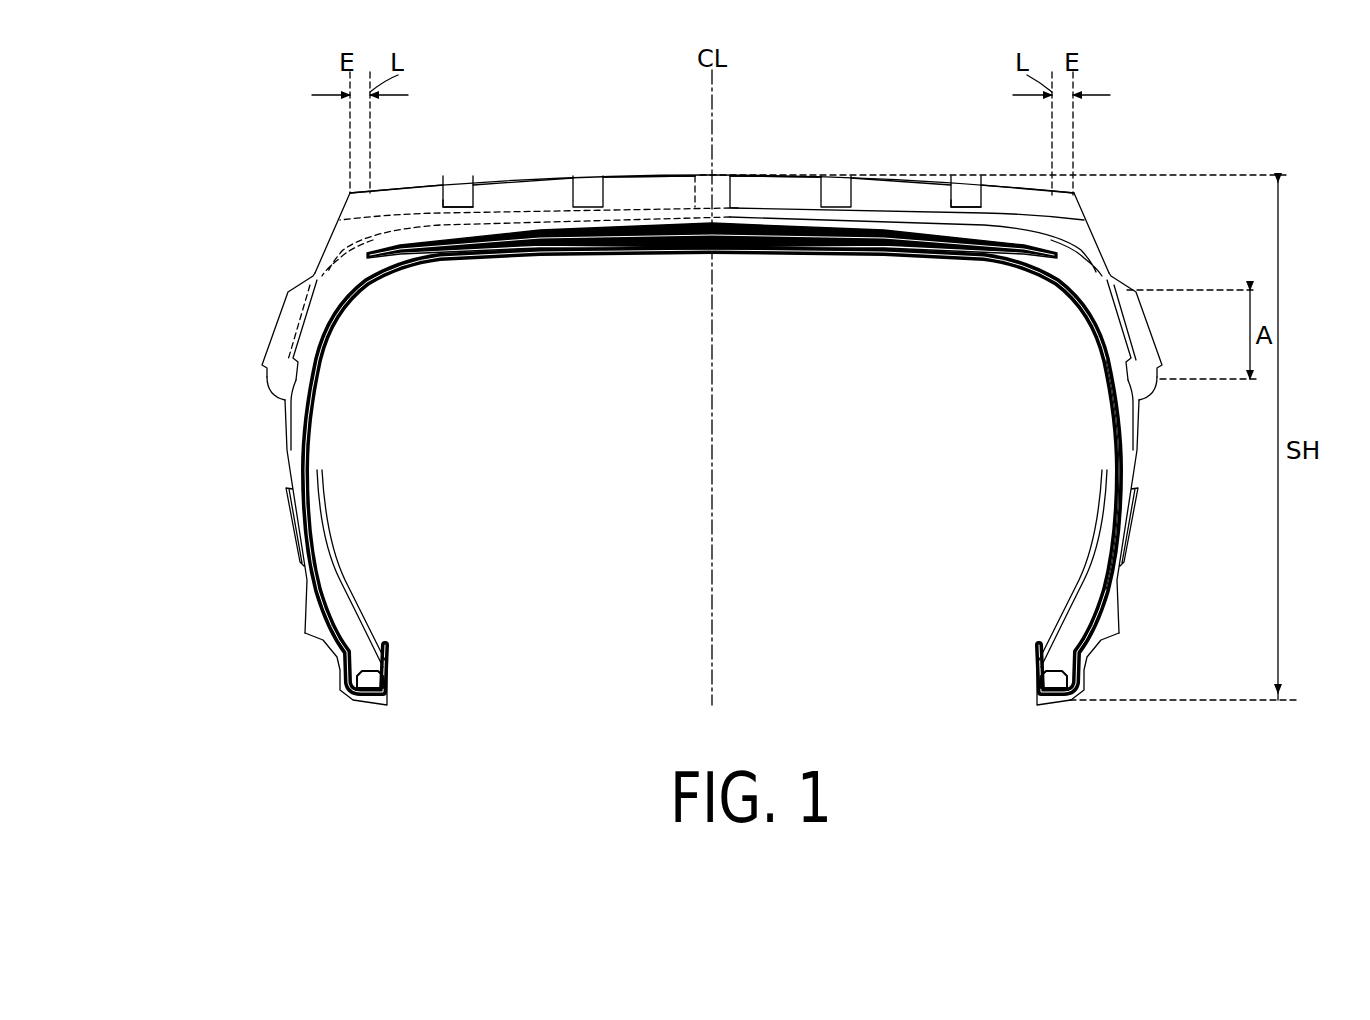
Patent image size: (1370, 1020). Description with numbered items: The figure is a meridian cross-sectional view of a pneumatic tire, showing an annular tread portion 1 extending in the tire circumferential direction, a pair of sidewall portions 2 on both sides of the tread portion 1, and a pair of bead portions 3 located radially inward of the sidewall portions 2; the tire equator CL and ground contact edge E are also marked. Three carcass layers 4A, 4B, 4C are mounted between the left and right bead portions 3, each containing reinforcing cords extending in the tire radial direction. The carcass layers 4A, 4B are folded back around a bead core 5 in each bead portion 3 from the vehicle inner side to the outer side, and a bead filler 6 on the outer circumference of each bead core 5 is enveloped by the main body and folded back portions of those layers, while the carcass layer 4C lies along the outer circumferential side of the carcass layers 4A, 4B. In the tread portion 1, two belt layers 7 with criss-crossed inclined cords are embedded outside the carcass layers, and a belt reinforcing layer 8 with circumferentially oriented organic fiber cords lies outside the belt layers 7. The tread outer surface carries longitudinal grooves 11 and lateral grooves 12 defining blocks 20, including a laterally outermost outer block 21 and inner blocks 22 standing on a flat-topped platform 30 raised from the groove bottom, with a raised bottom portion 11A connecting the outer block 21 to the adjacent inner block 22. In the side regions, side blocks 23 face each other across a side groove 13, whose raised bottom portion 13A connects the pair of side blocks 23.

The tread portion 1 is at (725, 140).
The sidewall portion 2 is at (270, 433).
The bead portion 3 is at (325, 678).
The carcass layer 4A is at (1105, 390).
The carcass layer 4B is at (1112, 420).
The carcass layer 4C is at (1112, 455).
The bead core 5 is at (372, 682).
The bead filler 6 is at (365, 645).
The belt layer 7 is at (868, 245).
The belt reinforcing layer 8 is at (995, 257).
The longitudinal groove 11 is at (462, 187).
The raised bottom portion 11A is at (441, 185).
The lateral groove 12 is at (652, 203).
The side groove 13 is at (267, 377).
The raised bottom portion 13A is at (267, 337).
The block 20 is at (523, 177).
The outer block 21 is at (388, 188).
The inner block 22 is at (627, 177).
The side block 23 is at (282, 305).
The platform 30 is at (405, 213).